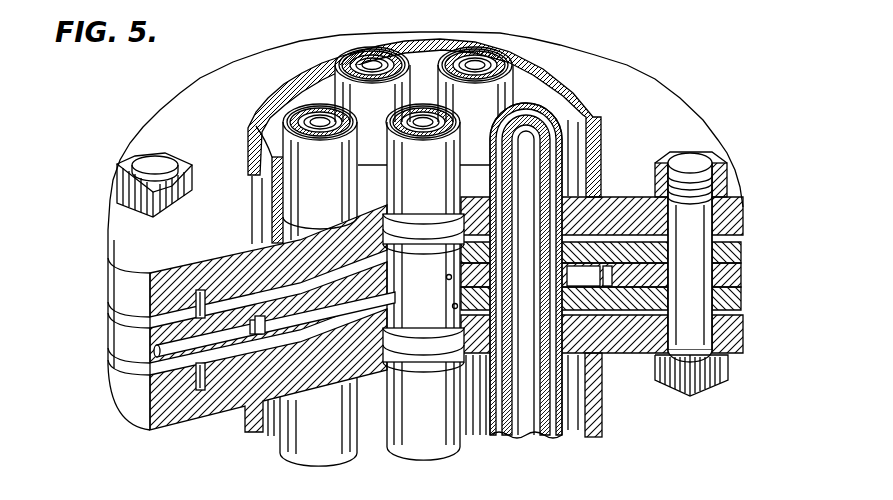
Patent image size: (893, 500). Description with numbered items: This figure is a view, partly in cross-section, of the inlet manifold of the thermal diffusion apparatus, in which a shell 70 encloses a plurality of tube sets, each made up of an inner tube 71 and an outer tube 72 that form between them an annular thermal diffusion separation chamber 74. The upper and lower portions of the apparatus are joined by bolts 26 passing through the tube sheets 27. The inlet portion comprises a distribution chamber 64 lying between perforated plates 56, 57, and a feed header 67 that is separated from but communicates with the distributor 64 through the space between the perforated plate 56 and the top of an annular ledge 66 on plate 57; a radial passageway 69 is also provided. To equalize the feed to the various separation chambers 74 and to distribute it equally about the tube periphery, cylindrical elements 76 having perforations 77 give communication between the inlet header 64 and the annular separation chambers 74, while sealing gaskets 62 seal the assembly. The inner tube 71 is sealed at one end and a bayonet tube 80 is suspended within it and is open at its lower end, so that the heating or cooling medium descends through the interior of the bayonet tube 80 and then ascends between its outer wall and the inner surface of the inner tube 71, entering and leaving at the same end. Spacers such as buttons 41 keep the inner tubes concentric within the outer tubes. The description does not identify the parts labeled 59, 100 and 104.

The bolts 26 is at (688, 217).
The tube sheets 27 is at (734, 218).
The buttons 41 is at (489, 420).
The perforated plate 56 is at (728, 255).
The perforated plate 57 is at (740, 300).
The spacer plate 59 is at (740, 277).
The sealing gaskets 62 is at (498, 298).
The distribution chamber 64 is at (400, 228).
The annular ledge 66 is at (262, 322).
The feed header 67 is at (240, 300).
The radial passageway 69 is at (152, 340).
The shell 70 is at (593, 125).
The inner tube 71 is at (300, 113).
The outer tube 72 is at (300, 100).
The annular thermal diffusion separation chamber 74 is at (566, 412).
The cylindrical elements 76 is at (446, 276).
The perforations 77 is at (452, 305).
The bayonet tube 80 is at (317, 110).
The sleeve 100 is at (273, 132).
The lug 104 is at (277, 417).